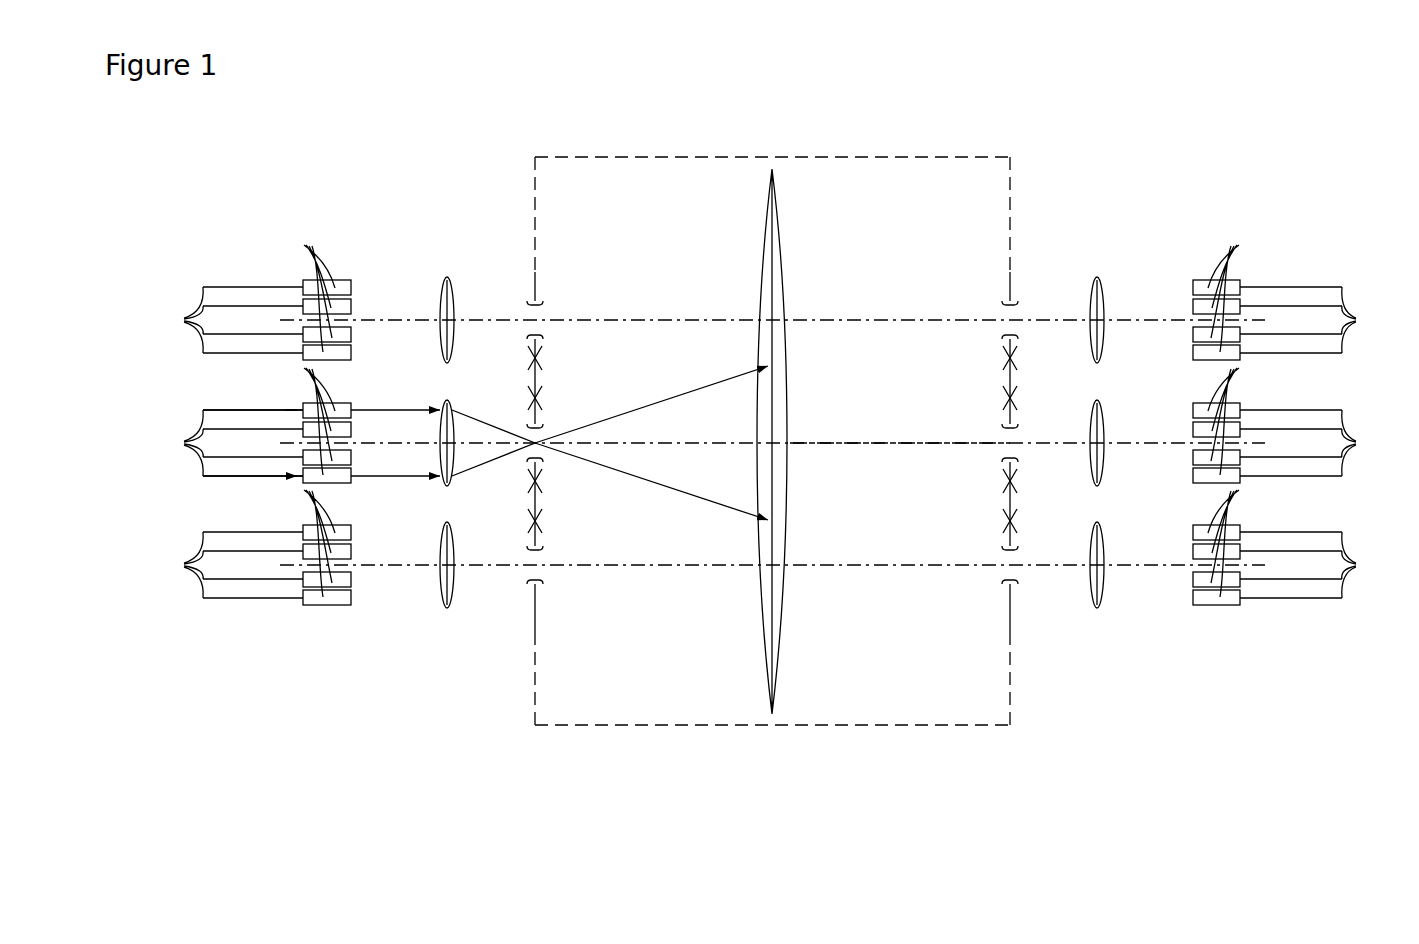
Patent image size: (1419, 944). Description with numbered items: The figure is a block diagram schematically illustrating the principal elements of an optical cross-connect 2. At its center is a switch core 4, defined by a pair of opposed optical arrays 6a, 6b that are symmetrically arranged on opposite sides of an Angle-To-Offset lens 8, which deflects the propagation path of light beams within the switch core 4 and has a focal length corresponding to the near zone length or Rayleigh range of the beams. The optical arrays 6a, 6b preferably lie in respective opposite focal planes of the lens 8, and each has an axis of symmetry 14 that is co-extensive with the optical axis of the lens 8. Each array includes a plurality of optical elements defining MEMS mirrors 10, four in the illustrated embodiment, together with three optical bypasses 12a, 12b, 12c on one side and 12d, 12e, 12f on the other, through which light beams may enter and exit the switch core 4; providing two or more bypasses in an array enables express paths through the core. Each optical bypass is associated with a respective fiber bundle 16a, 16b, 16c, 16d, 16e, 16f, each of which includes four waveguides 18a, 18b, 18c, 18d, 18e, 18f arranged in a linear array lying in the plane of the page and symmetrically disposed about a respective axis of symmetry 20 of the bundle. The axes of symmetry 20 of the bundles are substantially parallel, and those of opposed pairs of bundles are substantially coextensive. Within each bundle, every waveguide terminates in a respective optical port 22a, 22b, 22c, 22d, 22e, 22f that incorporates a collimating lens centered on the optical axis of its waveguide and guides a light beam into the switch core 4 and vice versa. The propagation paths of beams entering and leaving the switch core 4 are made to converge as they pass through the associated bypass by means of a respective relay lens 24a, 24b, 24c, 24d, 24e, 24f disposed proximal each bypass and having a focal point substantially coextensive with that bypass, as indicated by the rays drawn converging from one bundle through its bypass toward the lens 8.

The optical cross-connect 2 is at (1140, 150).
The switch core 4 is at (808, 157).
The optical array 6a is at (1005, 300).
The optical array 6b is at (538, 300).
The Angle-To-Offset (ATO) lens 8 is at (790, 240).
The MEMS mirror 10 is at (542, 398).
The optical bypass 12a is at (548, 316).
The optical bypass 12b is at (548, 438).
The optical bypass 12c is at (548, 574).
The optical bypass 12d is at (997, 316).
The optical bypass 12e is at (997, 438).
The optical bypass 12f is at (997, 574).
The axis of symmetry 14 is at (805, 442).
The fiber bundle 16a is at (232, 268).
The fiber bundle 16b is at (232, 394).
The fiber bundle 16c is at (222, 518).
The fiber bundle 16d is at (1302, 267).
The fiber bundle 16e is at (1307, 394).
The fiber bundle 16f is at (1312, 518).
The waveguide 18a is at (223, 320).
The waveguide 18b is at (223, 443).
The waveguide 18c is at (224, 565).
The waveguide 18d is at (1316, 320).
The waveguide 18e is at (1316, 443).
The waveguide 18f is at (1315, 565).
The axis of symmetry 20 is at (374, 318).
The optical port 22a is at (302, 293).
The optical port 22b is at (300, 421).
The optical port 22c is at (303, 543).
The optical port 22d is at (1241, 298).
The optical port 22e is at (1241, 421).
The optical port 22f is at (1240, 543).
The relay lens 24a is at (450, 278).
The relay lens 24b is at (445, 487).
The relay lens 24c is at (447, 608).
The relay lens 24d is at (1100, 362).
The relay lens 24e is at (1100, 487).
The relay lens 24f is at (1100, 608).